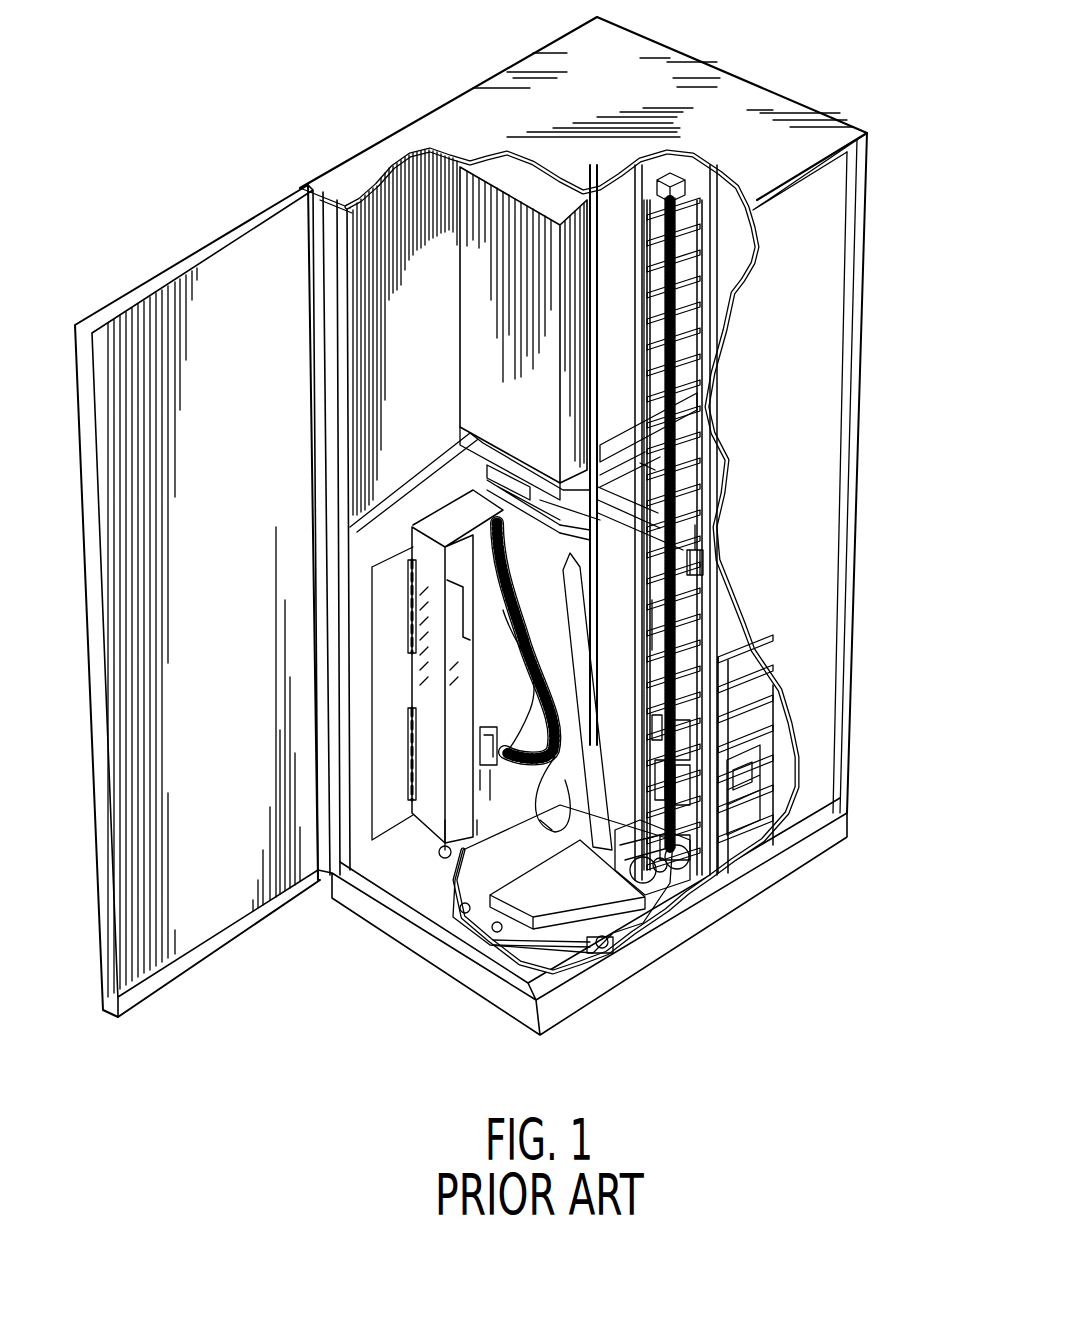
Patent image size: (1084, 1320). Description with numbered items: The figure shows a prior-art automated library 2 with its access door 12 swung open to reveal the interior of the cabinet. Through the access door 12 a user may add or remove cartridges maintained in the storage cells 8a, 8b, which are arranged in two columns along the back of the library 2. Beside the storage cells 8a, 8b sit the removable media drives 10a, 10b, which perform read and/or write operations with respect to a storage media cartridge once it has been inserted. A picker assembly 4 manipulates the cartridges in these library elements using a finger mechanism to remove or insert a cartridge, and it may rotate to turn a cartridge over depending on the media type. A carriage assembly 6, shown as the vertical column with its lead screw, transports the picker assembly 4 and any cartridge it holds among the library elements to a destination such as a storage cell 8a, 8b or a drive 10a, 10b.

The automated library 2 is at (251, 157).
The access door 12 is at (165, 370).
The carriage assembly 6 is at (748, 268).
The picker assembly 4 is at (695, 451).
The storage cell 8a is at (692, 623).
The storage cell 8b is at (761, 709).
The removable media drive 10a is at (689, 748).
The removable media drive 10b is at (767, 781).